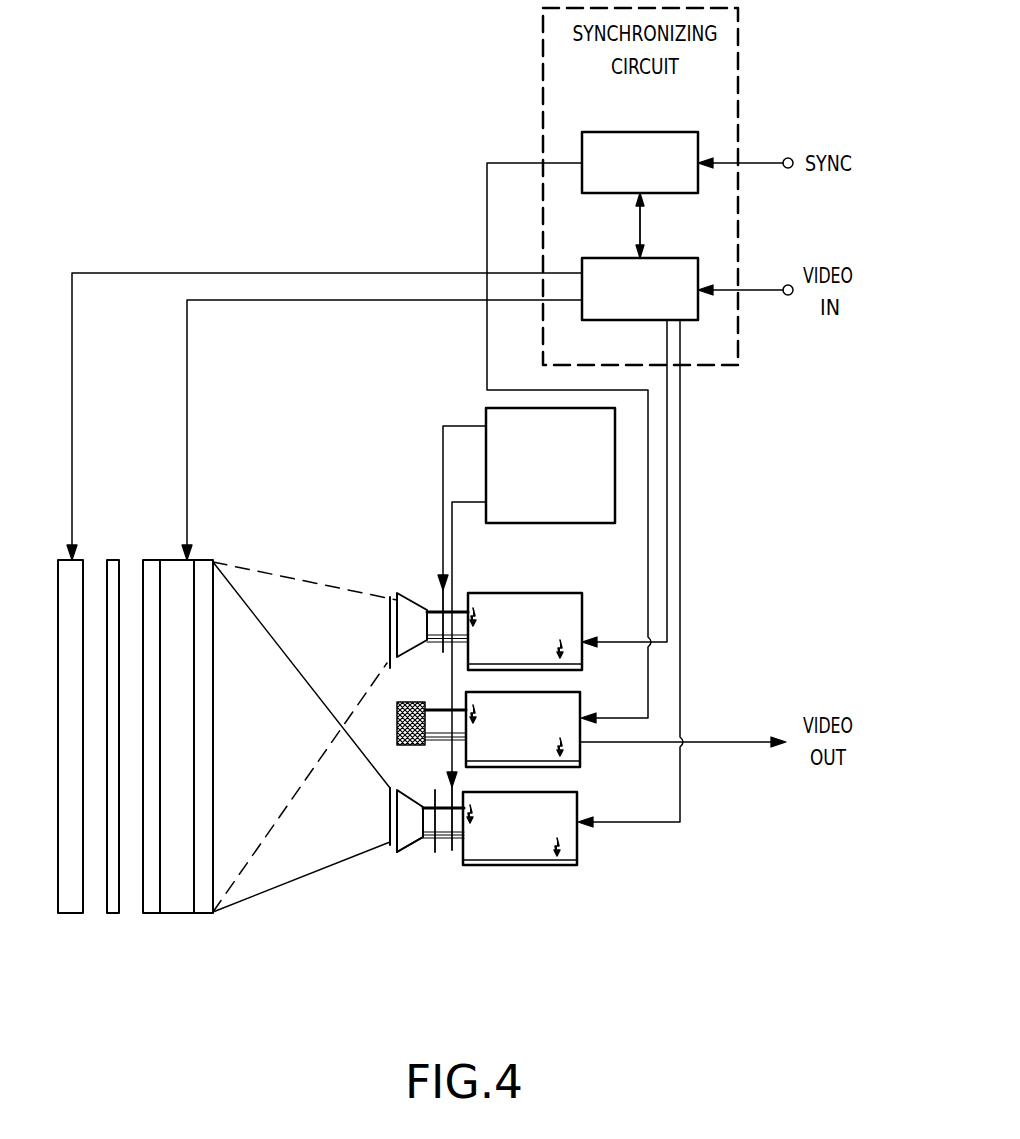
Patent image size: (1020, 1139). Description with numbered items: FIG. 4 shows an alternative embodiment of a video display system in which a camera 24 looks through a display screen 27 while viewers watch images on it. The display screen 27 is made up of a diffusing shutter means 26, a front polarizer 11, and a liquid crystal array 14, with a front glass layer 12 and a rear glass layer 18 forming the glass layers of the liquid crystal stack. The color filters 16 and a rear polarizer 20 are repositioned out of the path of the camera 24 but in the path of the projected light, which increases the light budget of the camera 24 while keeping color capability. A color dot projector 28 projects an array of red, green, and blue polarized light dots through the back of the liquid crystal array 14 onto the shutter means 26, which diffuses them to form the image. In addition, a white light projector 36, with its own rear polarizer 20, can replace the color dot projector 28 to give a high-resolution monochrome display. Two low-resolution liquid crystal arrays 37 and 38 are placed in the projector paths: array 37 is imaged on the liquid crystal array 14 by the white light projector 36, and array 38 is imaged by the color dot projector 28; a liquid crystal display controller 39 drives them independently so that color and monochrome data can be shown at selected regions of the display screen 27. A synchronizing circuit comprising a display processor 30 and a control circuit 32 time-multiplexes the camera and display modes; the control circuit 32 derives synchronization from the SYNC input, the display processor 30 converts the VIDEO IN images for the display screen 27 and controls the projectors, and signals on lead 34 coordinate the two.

The front polarizer 11 is at (110, 914).
The front glass layer 12 is at (150, 914).
The liquid crystal array 14 is at (167, 914).
The color filters 16 is at (418, 853).
The rear glass layer 18 is at (218, 771).
The rear polarizer 20 is at (392, 603).
The camera 24 is at (581, 748).
The diffusing shutter means 26 is at (72, 914).
The display screen 27 is at (134, 807).
The color dot projector 28 is at (562, 866).
The display processor 30 is at (615, 320).
The control circuit 32 is at (627, 132).
The lead 34 is at (638, 229).
The white light projector 36 is at (517, 593).
The liquid crystal array 37 is at (443, 652).
The liquid crystal array 38 is at (452, 850).
The liquid crystal display controller 39 is at (537, 512).